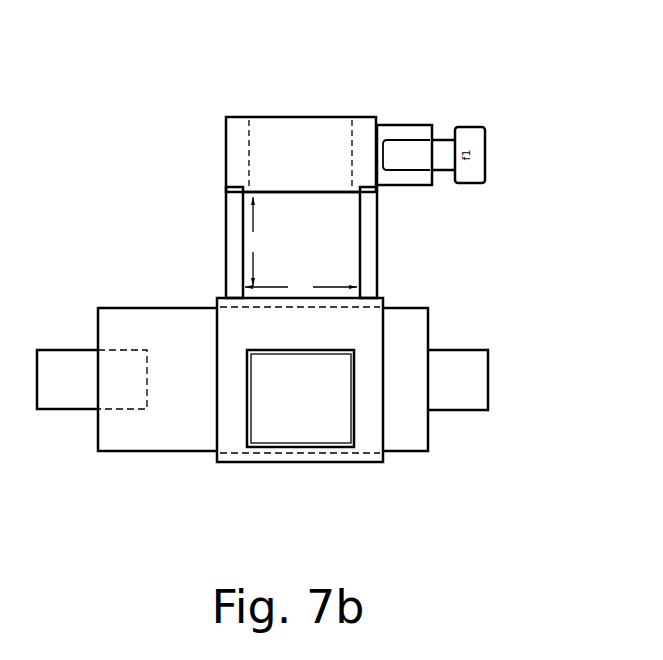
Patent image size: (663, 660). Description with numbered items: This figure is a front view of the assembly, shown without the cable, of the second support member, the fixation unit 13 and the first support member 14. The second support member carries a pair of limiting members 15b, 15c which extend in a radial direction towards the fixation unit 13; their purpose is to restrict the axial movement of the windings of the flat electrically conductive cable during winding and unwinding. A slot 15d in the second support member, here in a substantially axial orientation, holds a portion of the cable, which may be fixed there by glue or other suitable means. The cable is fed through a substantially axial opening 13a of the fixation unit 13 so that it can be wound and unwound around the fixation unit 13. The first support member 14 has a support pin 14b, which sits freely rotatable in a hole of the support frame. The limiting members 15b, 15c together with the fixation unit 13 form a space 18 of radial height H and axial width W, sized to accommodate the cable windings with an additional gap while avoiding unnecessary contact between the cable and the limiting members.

The fixation unit 13 is at (270, 463).
The substantially axial opening 13a is at (325, 428).
The first support member 14 is at (143, 452).
The support pin 14b is at (489, 382).
The limiting member 15b is at (379, 217).
The limiting member 15c is at (224, 217).
The slot 15d is at (315, 116).
The space 18 is at (307, 244).